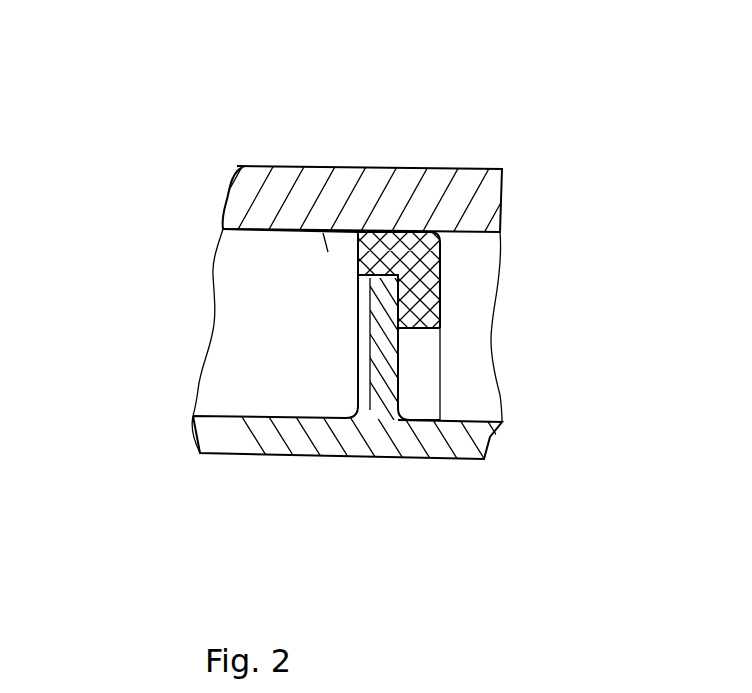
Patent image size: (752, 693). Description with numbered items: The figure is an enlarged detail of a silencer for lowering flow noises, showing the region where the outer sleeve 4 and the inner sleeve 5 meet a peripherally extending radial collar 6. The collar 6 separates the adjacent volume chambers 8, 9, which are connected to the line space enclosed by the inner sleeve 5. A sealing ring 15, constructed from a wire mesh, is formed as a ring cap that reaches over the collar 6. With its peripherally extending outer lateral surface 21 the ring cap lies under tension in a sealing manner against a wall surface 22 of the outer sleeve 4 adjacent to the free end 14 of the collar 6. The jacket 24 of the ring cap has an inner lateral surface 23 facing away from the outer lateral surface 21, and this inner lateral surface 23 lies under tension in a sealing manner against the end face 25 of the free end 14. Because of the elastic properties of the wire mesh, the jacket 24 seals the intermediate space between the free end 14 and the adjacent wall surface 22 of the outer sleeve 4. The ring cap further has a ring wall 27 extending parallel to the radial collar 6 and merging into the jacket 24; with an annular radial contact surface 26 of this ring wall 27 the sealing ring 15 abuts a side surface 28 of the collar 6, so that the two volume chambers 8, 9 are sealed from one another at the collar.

The outer sleeve 4 is at (272, 190).
The inner sleeve 5 is at (270, 433).
The radial collar 6 is at (385, 378).
The volume chamber 8 is at (278, 287).
The volume chamber 9 is at (476, 367).
The free end 14 is at (388, 318).
The sealing ring 15 is at (451, 247).
The outer lateral surface 21 is at (418, 232).
The wall surface 22 is at (318, 231).
The inner lateral surface 23 is at (380, 286).
The jacket 24 is at (386, 252).
The end face 25 is at (393, 277).
The radial contact surface 26 is at (386, 313).
The ring wall 27 is at (425, 313).
The side surface 28 is at (400, 360).